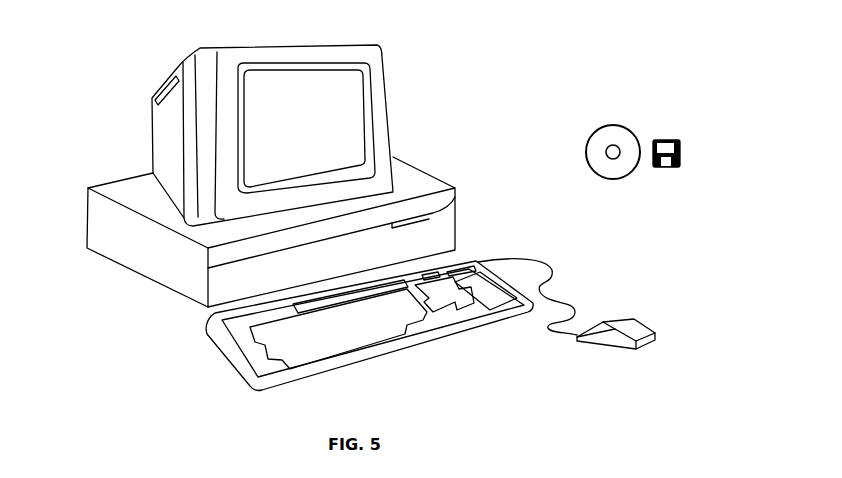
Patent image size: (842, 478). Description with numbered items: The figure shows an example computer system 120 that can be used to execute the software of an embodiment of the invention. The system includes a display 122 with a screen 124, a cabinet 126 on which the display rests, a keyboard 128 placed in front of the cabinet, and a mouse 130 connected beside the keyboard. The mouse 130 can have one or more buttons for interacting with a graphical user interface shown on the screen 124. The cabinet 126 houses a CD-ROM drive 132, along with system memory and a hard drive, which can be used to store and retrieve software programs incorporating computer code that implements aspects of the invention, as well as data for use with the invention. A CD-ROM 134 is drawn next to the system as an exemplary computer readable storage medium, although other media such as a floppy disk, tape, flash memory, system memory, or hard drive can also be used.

The computer system 120 is at (549, 30).
The display 122 is at (390, 137).
The screen 124 is at (363, 80).
The cabinet 126 is at (173, 294).
The keyboard 128 is at (373, 355).
The mouse 130 is at (647, 325).
The CD-ROM drive 132 is at (457, 190).
The CD-ROM 134 is at (645, 114).